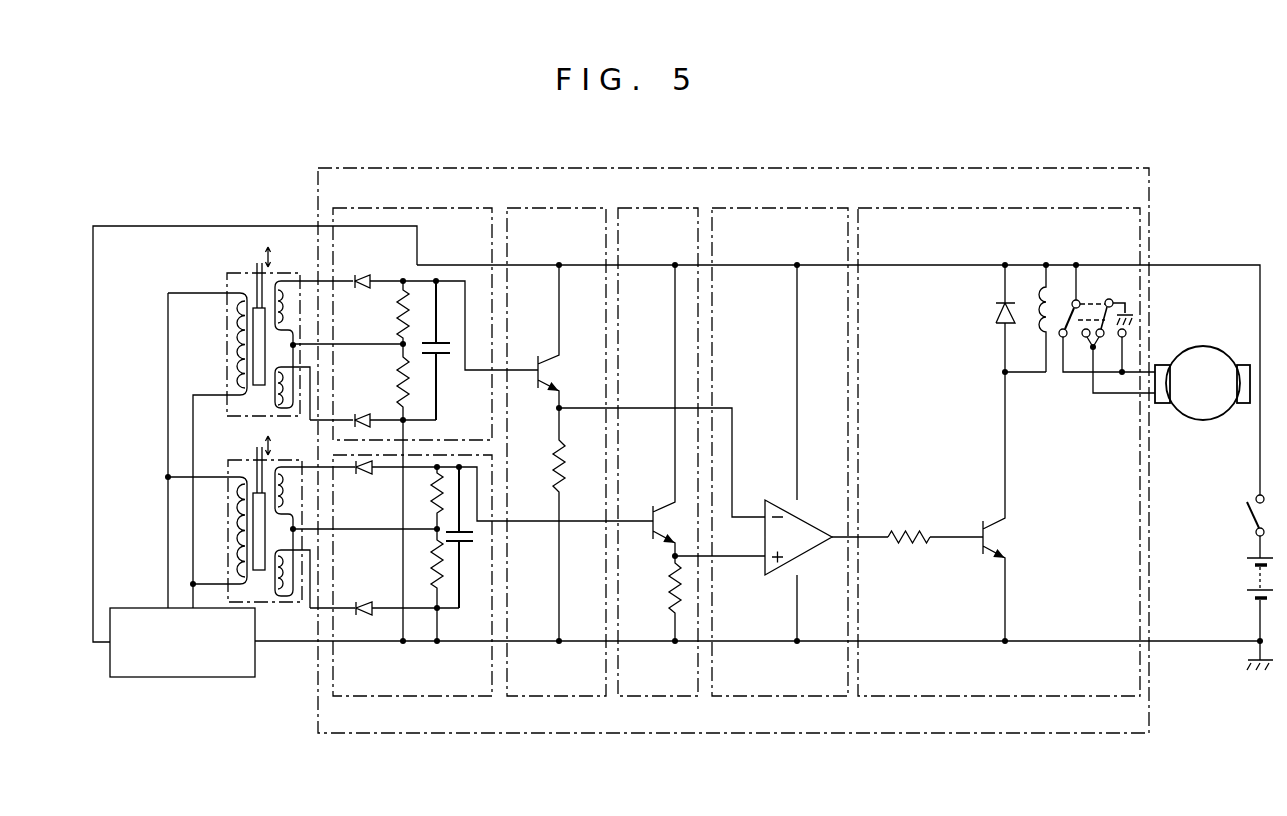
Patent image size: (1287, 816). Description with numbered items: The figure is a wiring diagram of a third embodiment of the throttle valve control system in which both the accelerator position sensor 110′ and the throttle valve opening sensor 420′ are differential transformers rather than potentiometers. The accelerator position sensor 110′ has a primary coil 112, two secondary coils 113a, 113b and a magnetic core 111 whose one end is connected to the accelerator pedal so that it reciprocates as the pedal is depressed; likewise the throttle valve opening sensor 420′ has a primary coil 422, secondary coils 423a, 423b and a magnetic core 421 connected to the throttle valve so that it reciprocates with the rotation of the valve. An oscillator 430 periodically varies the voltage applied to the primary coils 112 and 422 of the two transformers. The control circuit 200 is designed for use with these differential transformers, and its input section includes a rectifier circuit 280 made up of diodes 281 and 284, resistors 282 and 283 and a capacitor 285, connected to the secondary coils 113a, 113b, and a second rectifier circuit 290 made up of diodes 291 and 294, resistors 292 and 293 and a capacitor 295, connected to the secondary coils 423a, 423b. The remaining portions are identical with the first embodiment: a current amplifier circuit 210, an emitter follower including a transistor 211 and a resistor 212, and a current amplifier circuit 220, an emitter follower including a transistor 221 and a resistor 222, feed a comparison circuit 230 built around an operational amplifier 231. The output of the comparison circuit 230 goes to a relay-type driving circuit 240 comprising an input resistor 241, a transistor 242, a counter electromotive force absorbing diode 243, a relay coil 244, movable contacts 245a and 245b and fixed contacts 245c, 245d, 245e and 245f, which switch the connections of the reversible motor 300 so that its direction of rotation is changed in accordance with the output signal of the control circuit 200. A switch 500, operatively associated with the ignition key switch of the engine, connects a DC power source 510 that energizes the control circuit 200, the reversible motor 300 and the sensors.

The control circuit 200 is at (1048, 168).
The accelerator position sensor 110′ is at (227, 278).
The magnetic core 111 is at (257, 298).
The primary coil 112 is at (232, 333).
The secondary coil 113a is at (285, 287).
The secondary coil 113b is at (275, 393).
The throttle valve opening sensor 420′ is at (228, 540).
The magnetic core 421 is at (253, 485).
The primary coil 422 is at (232, 505).
The secondary coil 423a is at (293, 495).
The secondary coil 423b is at (293, 573).
The oscillator 430 is at (173, 677).
The rectifier circuit 280 is at (390, 207).
The diode 281 is at (361, 274).
The resistor 282 is at (396, 315).
The resistor 283 is at (396, 368).
The diode 284 is at (361, 413).
The capacitor 285 is at (448, 353).
The rectifier circuit 290 is at (388, 697).
The diode 291 is at (372, 474).
The resistor 292 is at (430, 497).
The resistor 293 is at (430, 555).
The diode 294 is at (366, 617).
The capacitor 295 is at (473, 537).
The current amplifier circuit 210 is at (525, 207).
The transistor 211 is at (553, 356).
The resistor 212 is at (563, 470).
The current amplifier circuit 220 is at (628, 207).
The transistor 221 is at (672, 500).
The resistor 222 is at (668, 595).
The comparison circuit 230 is at (755, 207).
The operational amplifier 231 is at (780, 499).
The relay-type driving circuit 240 is at (1020, 207).
The input resistor 241 is at (920, 527).
The transistor 242 is at (1000, 537).
The counter electromotive force absorbing diode 243 is at (995, 315).
The relay coil 244 is at (1040, 295).
The movable contact 245a is at (1074, 300).
The movable contact 245b is at (1112, 300).
The fixed contact 245c is at (1060, 336).
The fixed contact 245d is at (1085, 338).
The fixed contact 245e is at (1099, 338).
The fixed contact 245f is at (1134, 330).
The reversible motor 300 is at (1205, 420).
The switch 500 is at (1250, 520).
The DC power source 510 is at (1248, 575).